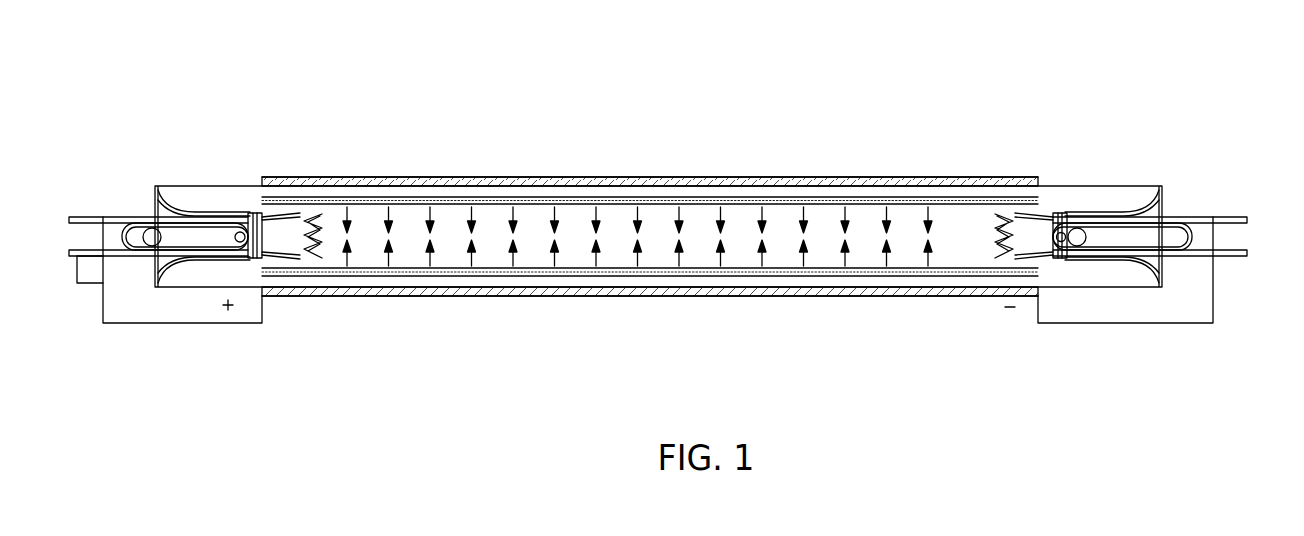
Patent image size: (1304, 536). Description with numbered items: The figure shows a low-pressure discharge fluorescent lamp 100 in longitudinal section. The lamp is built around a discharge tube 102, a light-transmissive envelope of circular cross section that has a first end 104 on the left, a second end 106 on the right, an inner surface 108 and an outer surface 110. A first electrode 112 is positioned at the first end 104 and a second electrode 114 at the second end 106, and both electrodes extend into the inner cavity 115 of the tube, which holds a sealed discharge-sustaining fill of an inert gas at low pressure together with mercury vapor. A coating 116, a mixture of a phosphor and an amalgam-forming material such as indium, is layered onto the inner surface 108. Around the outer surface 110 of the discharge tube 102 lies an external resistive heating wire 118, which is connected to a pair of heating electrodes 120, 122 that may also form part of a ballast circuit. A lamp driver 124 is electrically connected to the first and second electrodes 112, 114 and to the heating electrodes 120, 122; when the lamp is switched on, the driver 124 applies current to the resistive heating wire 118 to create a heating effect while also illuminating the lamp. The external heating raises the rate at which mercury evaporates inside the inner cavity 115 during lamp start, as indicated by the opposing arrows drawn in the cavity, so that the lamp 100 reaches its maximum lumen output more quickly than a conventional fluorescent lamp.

The fluorescent lamp 100 is at (372, 66).
The discharge tube 102 is at (700, 223).
The first end 104 is at (135, 198).
The second end 106 is at (1185, 198).
The inner surface 108 is at (650, 238).
The outer surface 110 is at (650, 238).
The first electrode 112 is at (85, 217).
The second electrode 114 is at (1237, 218).
The inner cavity 115 is at (363, 222).
The coating 116 is at (913, 202).
The external resistive heating wire 118 is at (982, 183).
The heating electrode 120 is at (183, 326).
The heating electrode 122 is at (1125, 323).
The lamp driver 124 is at (93, 283).